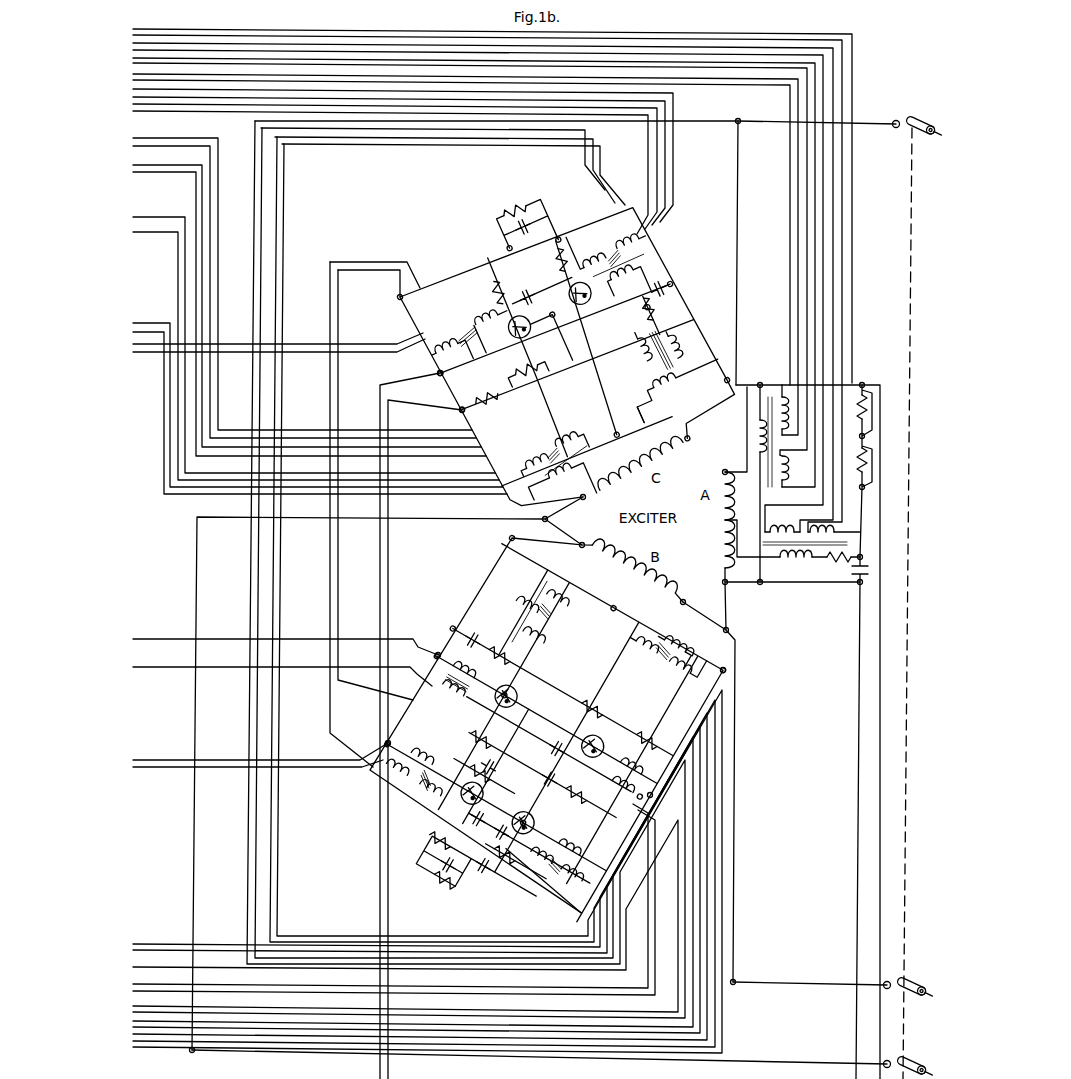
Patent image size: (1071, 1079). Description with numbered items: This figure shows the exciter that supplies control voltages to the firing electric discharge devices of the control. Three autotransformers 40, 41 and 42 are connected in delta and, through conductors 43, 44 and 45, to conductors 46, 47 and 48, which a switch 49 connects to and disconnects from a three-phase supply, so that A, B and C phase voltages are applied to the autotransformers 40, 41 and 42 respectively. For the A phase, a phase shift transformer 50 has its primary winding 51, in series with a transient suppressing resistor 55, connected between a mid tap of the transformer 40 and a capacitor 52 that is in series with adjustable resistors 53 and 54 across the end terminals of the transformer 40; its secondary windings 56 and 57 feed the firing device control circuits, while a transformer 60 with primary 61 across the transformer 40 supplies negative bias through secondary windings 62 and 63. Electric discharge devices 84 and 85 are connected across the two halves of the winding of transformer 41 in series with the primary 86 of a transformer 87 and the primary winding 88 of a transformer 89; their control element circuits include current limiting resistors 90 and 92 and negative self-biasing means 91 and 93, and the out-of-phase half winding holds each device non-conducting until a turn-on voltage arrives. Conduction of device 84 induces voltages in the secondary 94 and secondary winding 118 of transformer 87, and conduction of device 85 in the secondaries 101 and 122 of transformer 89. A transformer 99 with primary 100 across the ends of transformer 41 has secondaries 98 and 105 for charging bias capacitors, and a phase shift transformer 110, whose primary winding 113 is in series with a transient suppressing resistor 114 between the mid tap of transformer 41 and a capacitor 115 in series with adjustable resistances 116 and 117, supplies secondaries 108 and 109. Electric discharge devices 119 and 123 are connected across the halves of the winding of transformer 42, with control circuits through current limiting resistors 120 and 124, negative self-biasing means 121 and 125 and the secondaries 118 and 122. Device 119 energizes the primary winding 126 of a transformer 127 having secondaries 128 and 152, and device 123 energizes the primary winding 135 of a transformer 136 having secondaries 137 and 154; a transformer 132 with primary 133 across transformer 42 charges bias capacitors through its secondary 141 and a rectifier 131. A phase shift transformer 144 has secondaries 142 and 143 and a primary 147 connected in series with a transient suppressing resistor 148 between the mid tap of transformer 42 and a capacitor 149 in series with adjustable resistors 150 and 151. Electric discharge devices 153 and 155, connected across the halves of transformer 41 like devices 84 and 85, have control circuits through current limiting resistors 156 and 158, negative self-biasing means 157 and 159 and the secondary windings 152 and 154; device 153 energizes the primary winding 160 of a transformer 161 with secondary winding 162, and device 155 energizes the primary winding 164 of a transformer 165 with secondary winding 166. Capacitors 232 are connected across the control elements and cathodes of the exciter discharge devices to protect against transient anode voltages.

The autotransformer 40 is at (722, 537).
The autotransformer 41 is at (612, 560).
The autotransformer 42 is at (682, 450).
The conductor 43 is at (737, 237).
The conductor 44 is at (736, 746).
The conductor 45 is at (492, 522).
The conductor 46 is at (760, 132).
The conductor 47 is at (786, 983).
The conductor 48 is at (786, 1062).
The switch 49 is at (906, 203).
The phase shift transformer 50 is at (848, 544).
The primary winding 51 is at (808, 560).
The capacitor 52 is at (870, 570).
The adjustable resistor 53 is at (865, 384).
The adjustable resistor 54 is at (872, 470).
The transient suppressing resistor 55 is at (845, 560).
The secondary winding 56 is at (778, 528).
The secondary winding 57 is at (840, 530).
The transformer 60 is at (765, 383).
The primary winding 61 is at (757, 460).
The secondary winding 62 is at (789, 468).
The secondary winding 63 is at (781, 395).
The electric discharge device 84 is at (503, 814).
The electric discharge device 85 is at (470, 782).
The primary winding 86 is at (570, 848).
The transformer 87 is at (590, 880).
The primary winding 88 is at (425, 755).
The transformer 89 is at (385, 744).
The current limiting resistor 90 is at (505, 865).
The negative self-biasing means 91 is at (482, 870).
The current limiting resistor 92 is at (438, 841).
The negative self-biasing means 93 is at (445, 882).
The secondary winding 94 is at (543, 882).
The secondary winding 98 is at (683, 680).
The transformer 99 is at (726, 679).
The primary winding 100 is at (665, 632).
The secondary winding 101 is at (428, 805).
The secondary winding 105 is at (640, 656).
The secondary winding 108 is at (544, 644).
The secondary winding 109 is at (564, 603).
The phase shift transformer 110 is at (552, 578).
The primary winding 113 is at (530, 604).
The transient suppressing resistor 114 is at (501, 639).
The capacitor 115 is at (478, 635).
The adjustable resistance 116 is at (612, 708).
The adjustable resistance 117 is at (652, 732).
The secondary winding 118 is at (537, 872).
The electric discharge device 119 is at (528, 332).
The current limiting resistor 120 is at (484, 292).
The negative self-biasing means 121 is at (526, 235).
The secondary winding 122 is at (385, 785).
The electric discharge device 123 is at (594, 296).
The current limiting resistor 124 is at (556, 225).
The negative self-biasing means 125 is at (538, 205).
The primary winding 126 is at (450, 405).
The transformer 127 is at (437, 374).
The secondary winding 128 is at (478, 310).
The rectifier 131 is at (527, 471).
The transformer 132 is at (576, 450).
The primary winding 133 is at (574, 472).
The primary winding 135 is at (628, 273).
The transformer 136 is at (658, 246).
The secondary winding 137 is at (650, 233).
The secondary winding 141 is at (567, 432).
The secondary winding 142 is at (637, 339).
The secondary winding 143 is at (640, 407).
The phase shift transformer 144 is at (686, 378).
The primary winding 147 is at (682, 339).
The transient suppressing resistor 148 is at (683, 306).
The capacitor 149 is at (673, 283).
The adjustable resistor 150 is at (516, 366).
The adjustable resistor 151 is at (474, 391).
The secondary winding 152 is at (437, 335).
The electric discharge device 153 is at (594, 753).
The secondary winding 154 is at (585, 251).
The electric discharge device 155 is at (518, 693).
The current limiting resistor 156 is at (579, 794).
The negative self-biasing means 157 is at (560, 800).
The current limiting resistor 158 is at (469, 738).
The negative self-biasing means 159 is at (499, 765).
The primary winding 160 is at (637, 765).
The transformer 161 is at (655, 797).
The secondary winding 162 is at (619, 797).
The primary winding 164 is at (470, 675).
The transformer 165 is at (427, 653).
The secondary winding 166 is at (464, 699).
The capacitor 232 is at (545, 518).